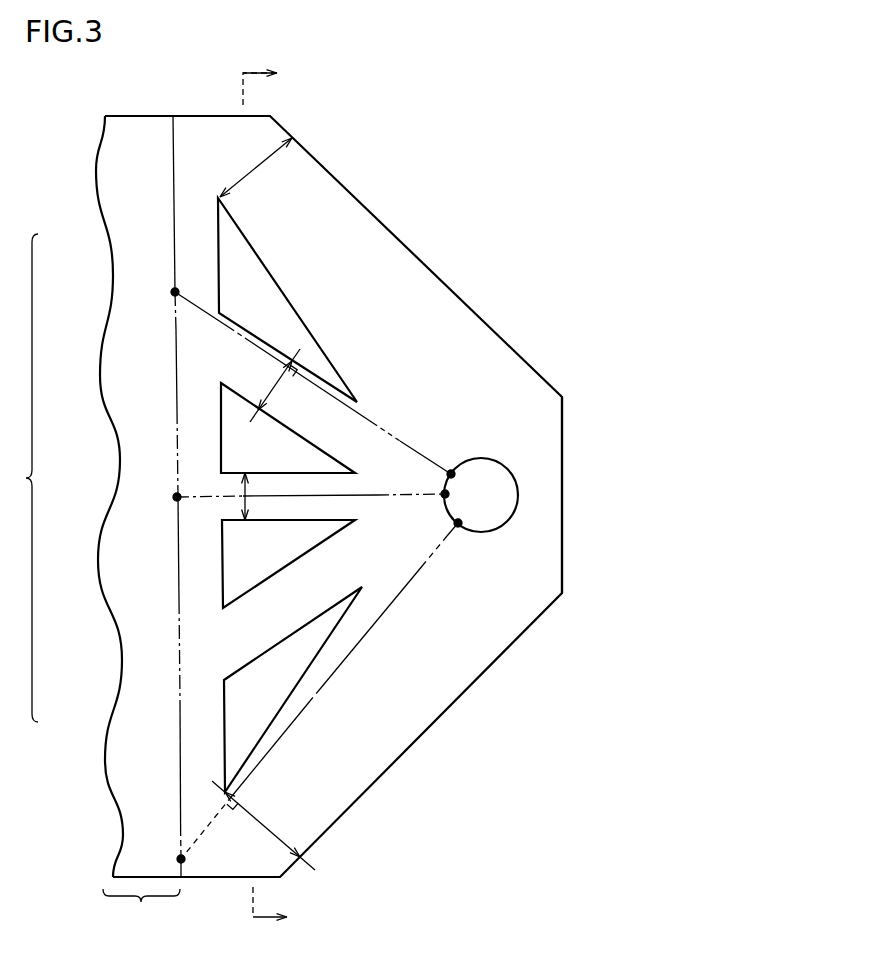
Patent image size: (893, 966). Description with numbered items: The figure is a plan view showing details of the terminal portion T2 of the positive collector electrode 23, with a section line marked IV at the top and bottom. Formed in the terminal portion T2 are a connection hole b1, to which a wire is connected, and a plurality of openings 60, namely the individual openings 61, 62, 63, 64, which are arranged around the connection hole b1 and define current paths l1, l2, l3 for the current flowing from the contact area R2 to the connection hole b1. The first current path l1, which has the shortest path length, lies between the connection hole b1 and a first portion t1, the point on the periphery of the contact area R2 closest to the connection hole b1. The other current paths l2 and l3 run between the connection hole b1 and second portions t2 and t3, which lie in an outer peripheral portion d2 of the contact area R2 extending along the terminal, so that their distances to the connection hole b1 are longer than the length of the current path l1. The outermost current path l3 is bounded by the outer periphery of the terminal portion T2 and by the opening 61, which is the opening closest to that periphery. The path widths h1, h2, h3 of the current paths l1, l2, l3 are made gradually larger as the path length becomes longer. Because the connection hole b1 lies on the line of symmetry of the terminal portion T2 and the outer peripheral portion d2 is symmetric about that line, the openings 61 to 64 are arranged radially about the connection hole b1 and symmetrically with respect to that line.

The positive collector electrode 23 is at (450, 284).
The terminal portion T2 is at (553, 522).
The plurality of openings 60 is at (21, 478).
The opening 61 is at (226, 730).
The opening 62 is at (224, 570).
The opening 63 is at (222, 455).
The opening 64 is at (221, 273).
The outer peripheral portion d2 is at (180, 769).
The first portion t1 is at (164, 499).
The second portion t2 is at (163, 293).
The second portion t3 is at (168, 859).
The connection hole b1 is at (515, 500).
The first current path l1 is at (372, 492).
The current path l2 is at (411, 447).
The current path l3 is at (410, 582).
The path width h1 is at (259, 496).
The path width h2 is at (273, 385).
The path width h3 is at (263, 504).
The contact area R2 is at (141, 906).
The section line IV- IV is at (275, 498).